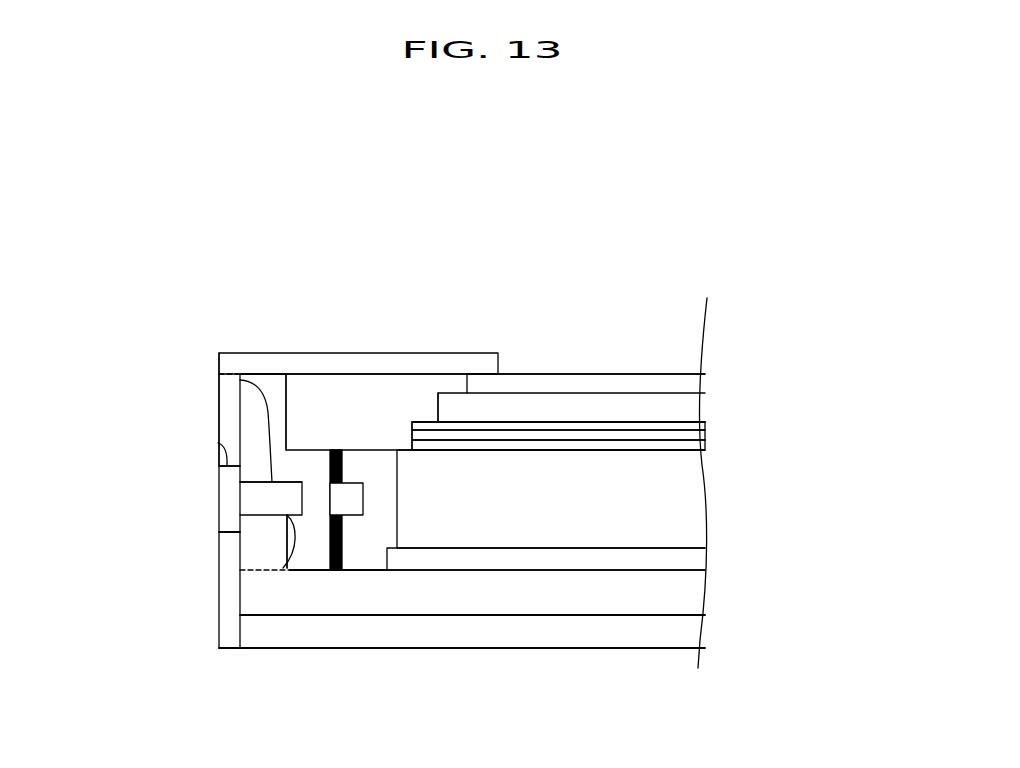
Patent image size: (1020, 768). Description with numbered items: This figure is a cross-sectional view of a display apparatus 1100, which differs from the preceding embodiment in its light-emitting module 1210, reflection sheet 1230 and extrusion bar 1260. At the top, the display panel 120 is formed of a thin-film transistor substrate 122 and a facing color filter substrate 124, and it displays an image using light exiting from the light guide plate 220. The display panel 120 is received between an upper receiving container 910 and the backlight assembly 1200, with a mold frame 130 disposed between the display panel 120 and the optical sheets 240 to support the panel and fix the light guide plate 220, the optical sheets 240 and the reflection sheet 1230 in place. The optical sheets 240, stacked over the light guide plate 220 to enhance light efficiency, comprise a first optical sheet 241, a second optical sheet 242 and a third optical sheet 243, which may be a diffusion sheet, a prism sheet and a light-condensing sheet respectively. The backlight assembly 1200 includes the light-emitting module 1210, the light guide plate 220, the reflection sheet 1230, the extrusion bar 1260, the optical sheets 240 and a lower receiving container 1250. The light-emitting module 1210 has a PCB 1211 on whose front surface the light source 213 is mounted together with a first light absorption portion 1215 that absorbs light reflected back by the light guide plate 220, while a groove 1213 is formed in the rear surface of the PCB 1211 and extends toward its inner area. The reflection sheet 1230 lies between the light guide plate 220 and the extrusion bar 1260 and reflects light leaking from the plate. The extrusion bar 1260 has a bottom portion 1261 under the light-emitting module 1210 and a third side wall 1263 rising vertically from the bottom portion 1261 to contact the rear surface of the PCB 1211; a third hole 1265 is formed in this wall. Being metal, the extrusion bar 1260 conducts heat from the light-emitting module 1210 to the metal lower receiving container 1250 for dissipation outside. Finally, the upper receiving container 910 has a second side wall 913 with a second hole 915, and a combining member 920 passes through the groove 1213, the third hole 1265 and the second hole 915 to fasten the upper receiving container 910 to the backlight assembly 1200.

The display apparatus 1100 is at (682, 280).
The upper receiving container 910 is at (300, 363).
The mold frame 130 is at (377, 390).
The display panel 120 is at (625, 294).
The color filter substrate 124 is at (538, 380).
The thin-film transistor substrate 122 is at (603, 397).
The third optical sheet 243 is at (700, 426).
The second optical sheet 242 is at (698, 436).
The first optical sheet 241 is at (698, 448).
The optical sheets 240 is at (783, 400).
The light guide plate 220 is at (695, 502).
The reflection sheet 1230 is at (695, 560).
The lower receiving container 1250 is at (695, 633).
The backlight assembly 1200 is at (834, 650).
The third hole 1265 is at (240, 380).
The second side wall 913 is at (223, 417).
The second hole 915 is at (218, 443).
The combining member 920 is at (223, 498).
The third side wall 1263 is at (247, 550).
The bottom portion 1261 is at (247, 597).
The extrusion bar 1260 is at (118, 542).
The groove 1213 is at (300, 538).
The PCB 1211 is at (310, 537).
The first light absorption portion 1215 is at (334, 570).
The light source 213 is at (350, 507).
The light-emitting module 1210 is at (403, 714).